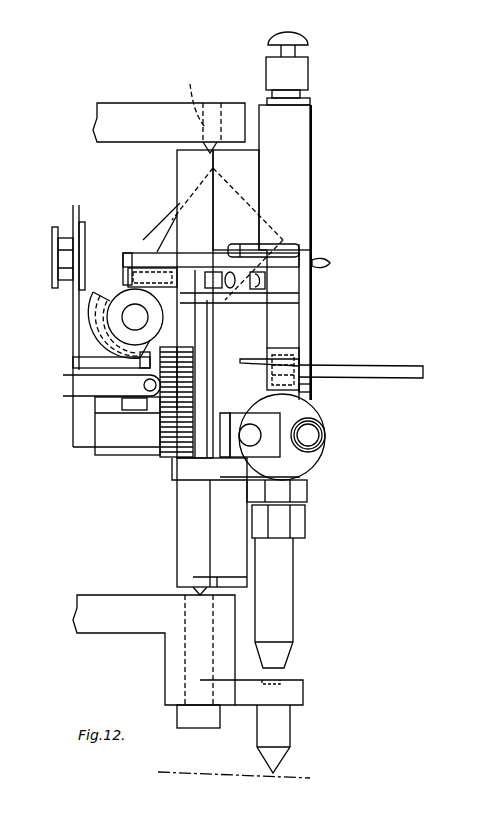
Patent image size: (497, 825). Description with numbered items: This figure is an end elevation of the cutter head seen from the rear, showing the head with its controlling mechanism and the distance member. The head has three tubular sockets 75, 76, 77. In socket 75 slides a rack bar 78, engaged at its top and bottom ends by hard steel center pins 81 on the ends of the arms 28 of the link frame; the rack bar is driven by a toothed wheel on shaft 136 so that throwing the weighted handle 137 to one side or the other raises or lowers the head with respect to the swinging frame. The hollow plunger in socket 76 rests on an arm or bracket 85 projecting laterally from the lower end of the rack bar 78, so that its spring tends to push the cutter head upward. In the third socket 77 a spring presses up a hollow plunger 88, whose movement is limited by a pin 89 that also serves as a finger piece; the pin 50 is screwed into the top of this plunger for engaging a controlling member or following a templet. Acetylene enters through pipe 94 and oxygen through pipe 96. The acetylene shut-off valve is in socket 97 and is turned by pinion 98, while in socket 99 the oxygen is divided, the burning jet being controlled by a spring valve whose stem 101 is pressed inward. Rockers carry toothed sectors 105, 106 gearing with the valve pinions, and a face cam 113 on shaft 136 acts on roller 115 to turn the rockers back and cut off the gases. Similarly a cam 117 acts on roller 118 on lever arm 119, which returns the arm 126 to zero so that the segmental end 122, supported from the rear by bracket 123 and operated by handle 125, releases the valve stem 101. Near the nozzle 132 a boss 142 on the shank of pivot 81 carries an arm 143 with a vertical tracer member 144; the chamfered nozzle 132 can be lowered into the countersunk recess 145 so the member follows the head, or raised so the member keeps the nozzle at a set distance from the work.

The arms of the link frame 28 is at (158, 120).
The pin 50 is at (281, 50).
The tubular socket 75 is at (190, 162).
The tubular socket 76 is at (300, 172).
The tubular socket 77 is at (300, 200).
The rack bar 78 is at (210, 522).
The center pins 81 is at (192, 96).
The arm or bracket 85 is at (250, 582).
The hollow plunger 88 is at (268, 101).
The pin 89 is at (331, 264).
The pipe 94 is at (252, 437).
The pipe 96 is at (318, 440).
The socket 97 is at (300, 403).
The pinion 98 is at (168, 440).
The socket 99 is at (300, 470).
The stem of spring valve 101 is at (313, 390).
The toothed sector 105 is at (120, 383).
The toothed sector 106 is at (95, 405).
The face cam 113 is at (95, 330).
The roller 115 is at (140, 358).
The cam 117 is at (145, 270).
The roller 118 is at (122, 262).
The lever arm 119 is at (135, 265).
The segmental end 122 is at (245, 360).
The bracket 123 is at (290, 352).
The handle 125 is at (399, 366).
The arm 126 is at (293, 252).
The nozzle 132 is at (270, 612).
The shaft 136 is at (135, 317).
The weighted handle 137 is at (176, 226).
The boss 142 is at (105, 605).
The arm 143 is at (295, 694).
The tracer member 144 is at (278, 725).
The countersunk recess 145 is at (278, 682).